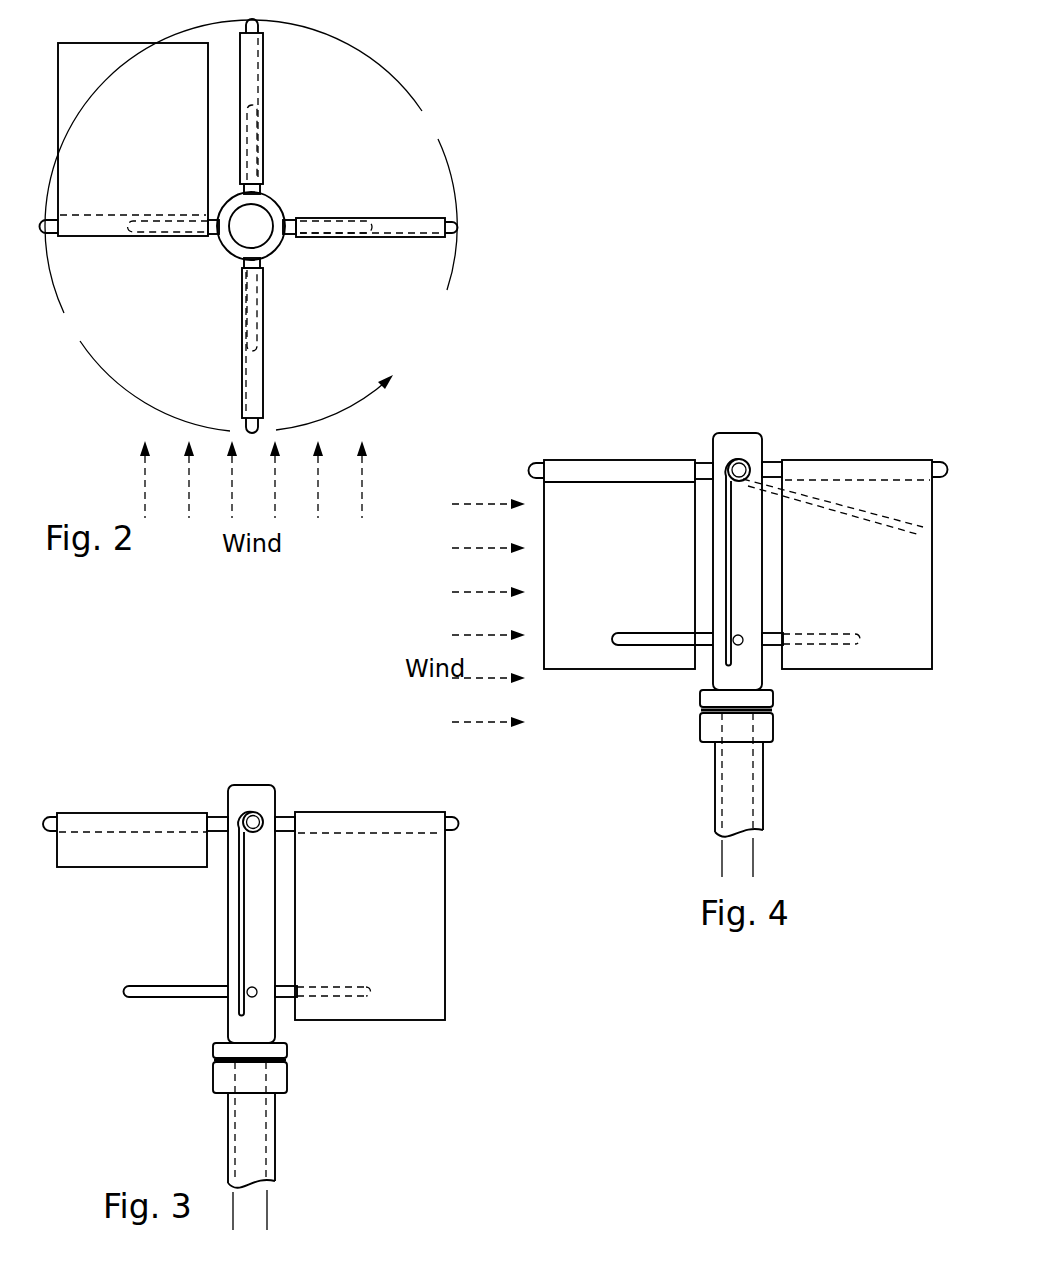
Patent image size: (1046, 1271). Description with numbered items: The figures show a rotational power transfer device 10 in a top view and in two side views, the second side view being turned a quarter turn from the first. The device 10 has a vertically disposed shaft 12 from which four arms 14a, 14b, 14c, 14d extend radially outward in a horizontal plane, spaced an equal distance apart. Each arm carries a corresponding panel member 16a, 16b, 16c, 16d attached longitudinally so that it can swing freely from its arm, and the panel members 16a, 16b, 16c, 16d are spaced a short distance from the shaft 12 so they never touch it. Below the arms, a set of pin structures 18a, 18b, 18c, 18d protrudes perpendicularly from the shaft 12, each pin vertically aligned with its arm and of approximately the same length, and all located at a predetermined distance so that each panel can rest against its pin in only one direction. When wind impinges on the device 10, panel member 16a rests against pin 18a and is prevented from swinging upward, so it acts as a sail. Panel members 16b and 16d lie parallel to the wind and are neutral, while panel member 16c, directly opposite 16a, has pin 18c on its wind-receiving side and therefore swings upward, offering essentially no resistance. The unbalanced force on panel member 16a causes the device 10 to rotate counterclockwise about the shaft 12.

In FIG. 2, the rotational power transfer device 10 is at (562, 121).
In FIG. 3, the rotational power transfer device 10 is at (158, 696).
In FIG. 4, the rotational power transfer device 10 is at (810, 300).
In FIG. 3, the shaft 12 is at (253, 785).
In FIG. 4, the shaft 12 is at (738, 434).
In FIG. 2, the arm 14a is at (460, 228).
In FIG. 3, the arm 14a is at (458, 825).
In FIG. 4, the arm 14a is at (737, 466).
In FIG. 2, the arm 14b is at (264, 24).
In FIG. 4, the arm 14b is at (777, 462).
In FIG. 2, the arm 14c is at (62, 242).
In FIG. 3, the arm 14c is at (220, 815).
In FIG. 2, the arm 14d is at (240, 433).
In FIG. 3, the arm 14d is at (257, 818).
In FIG. 4, the arm 14d is at (702, 460).
In FIG. 2, the panel member 16a is at (410, 227).
In FIG. 3, the panel member 16a is at (437, 868).
In FIG. 4, the panel member 16a is at (725, 592).
In FIG. 2, the panel member 16b is at (250, 78).
In FIG. 4, the panel member 16b is at (888, 632).
In FIG. 2, the panel member 16c is at (140, 163).
In FIG. 3, the panel member 16c is at (138, 857).
In FIG. 4, the panel member 16c is at (787, 462).
In FIG. 2, the panel member 16d is at (262, 372).
In FIG. 3, the panel member 16d is at (240, 942).
In FIG. 4, the panel member 16d is at (585, 632).
In FIG. 2, the pin structure 18a is at (342, 238).
In FIG. 3, the pin structure 18a is at (283, 997).
In FIG. 4, the pin structure 18a is at (768, 645).
In FIG. 2, the pin structure 18b is at (262, 142).
In FIG. 4, the pin structure 18b is at (742, 647).
In FIG. 2, the pin structure 18c is at (168, 233).
In FIG. 3, the pin structure 18c is at (195, 997).
In FIG. 2, the pin structure 18d is at (262, 307).
In FIG. 3, the pin structure 18d is at (254, 998).
In FIG. 4, the pin structure 18d is at (628, 642).